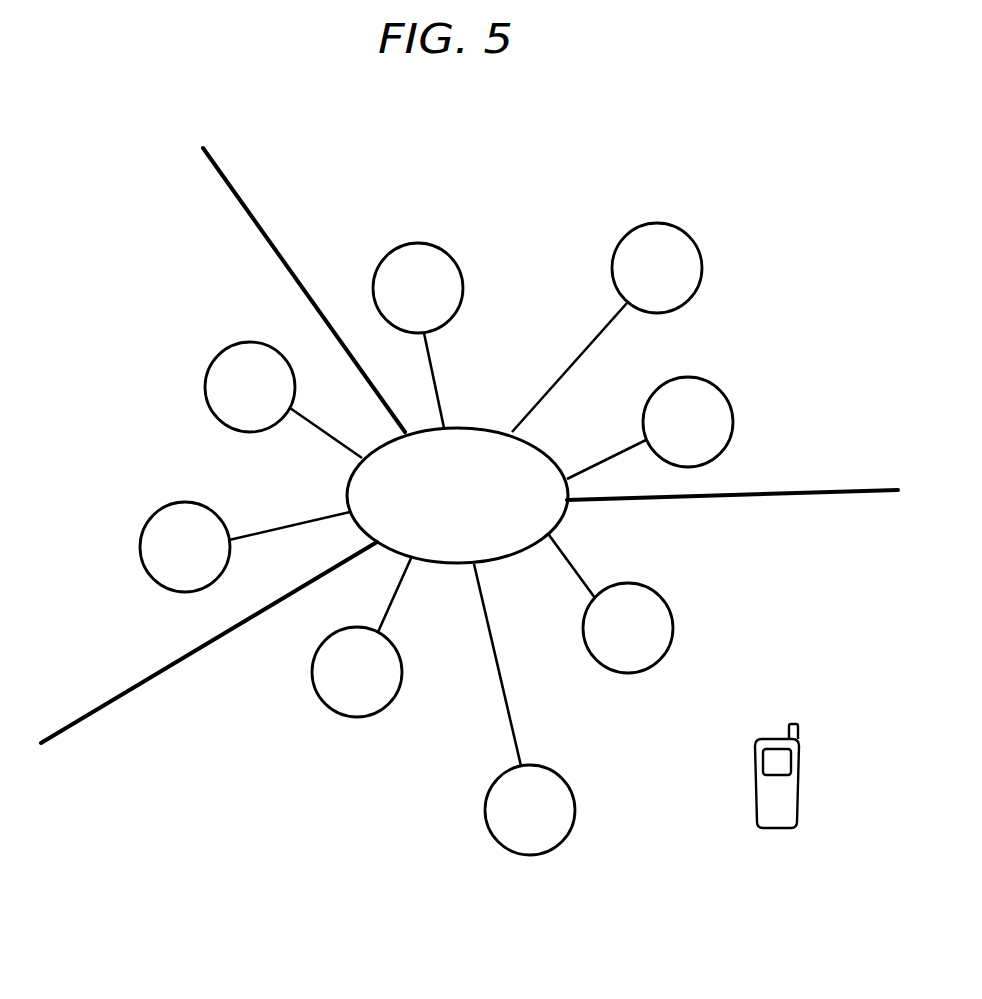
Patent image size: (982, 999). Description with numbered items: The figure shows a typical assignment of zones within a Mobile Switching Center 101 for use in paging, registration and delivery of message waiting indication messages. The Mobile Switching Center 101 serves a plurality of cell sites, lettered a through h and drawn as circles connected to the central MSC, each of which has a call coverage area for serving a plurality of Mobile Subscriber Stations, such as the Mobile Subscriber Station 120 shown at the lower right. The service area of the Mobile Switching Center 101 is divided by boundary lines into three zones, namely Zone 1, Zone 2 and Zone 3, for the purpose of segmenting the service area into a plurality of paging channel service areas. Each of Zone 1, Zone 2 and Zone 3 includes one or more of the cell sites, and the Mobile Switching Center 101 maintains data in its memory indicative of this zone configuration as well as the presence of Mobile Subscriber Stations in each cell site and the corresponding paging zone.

The zone 1 is at (183, 426).
The zone 2 is at (431, 765).
The zone 3 is at (553, 211).
The Mobile Switching Center 101 is at (478, 427).
The Mobile Subscriber Station 120 is at (800, 783).